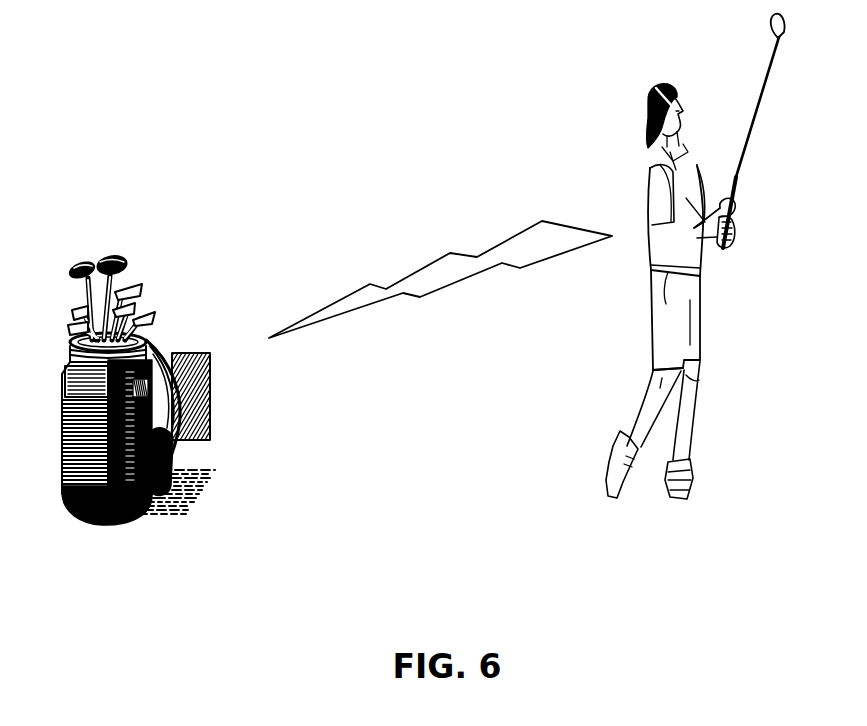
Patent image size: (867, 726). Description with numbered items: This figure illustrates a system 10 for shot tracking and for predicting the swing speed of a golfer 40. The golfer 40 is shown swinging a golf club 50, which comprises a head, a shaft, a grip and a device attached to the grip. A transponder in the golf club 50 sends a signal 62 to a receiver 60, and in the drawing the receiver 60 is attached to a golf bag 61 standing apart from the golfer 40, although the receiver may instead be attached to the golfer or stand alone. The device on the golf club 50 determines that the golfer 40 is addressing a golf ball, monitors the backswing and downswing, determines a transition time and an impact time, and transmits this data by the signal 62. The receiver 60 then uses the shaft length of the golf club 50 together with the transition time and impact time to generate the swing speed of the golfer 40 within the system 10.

The system 10 is at (364, 146).
The golfer 40 is at (670, 78).
The golf club 50 is at (759, 131).
The receiver 60 is at (197, 427).
The golf bag 61 is at (135, 243).
The signal 62 is at (518, 268).